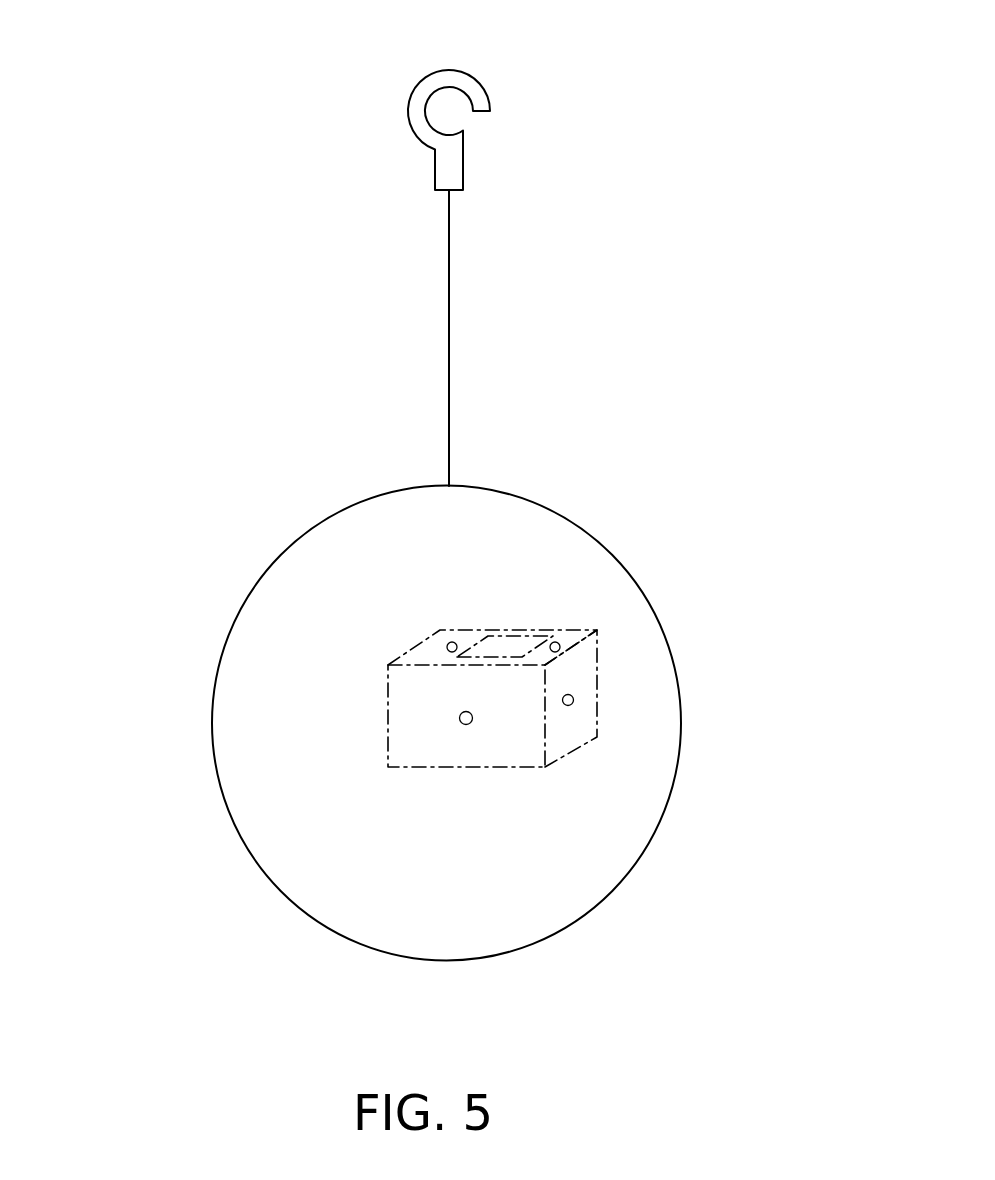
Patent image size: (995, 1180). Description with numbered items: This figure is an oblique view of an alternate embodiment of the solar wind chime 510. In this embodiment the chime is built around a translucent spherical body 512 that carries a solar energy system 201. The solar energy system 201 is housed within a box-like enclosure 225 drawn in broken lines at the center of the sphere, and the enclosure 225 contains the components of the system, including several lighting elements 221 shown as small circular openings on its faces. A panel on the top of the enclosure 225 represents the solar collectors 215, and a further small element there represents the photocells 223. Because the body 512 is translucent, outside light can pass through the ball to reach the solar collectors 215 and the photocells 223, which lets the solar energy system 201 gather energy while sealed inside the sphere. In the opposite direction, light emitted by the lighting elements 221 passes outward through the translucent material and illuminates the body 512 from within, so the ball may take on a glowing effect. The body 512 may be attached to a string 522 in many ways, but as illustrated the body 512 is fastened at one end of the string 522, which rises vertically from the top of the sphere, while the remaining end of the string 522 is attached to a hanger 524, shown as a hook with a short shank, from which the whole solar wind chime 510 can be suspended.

The solar wind chime 510 is at (131, 429).
The translucent spherical body 512 is at (621, 892).
The string 522 is at (453, 302).
The hanger 524 is at (483, 81).
The solar energy system 201 is at (418, 718).
The solar collectors 215 is at (527, 635).
The lighting elements 221 is at (558, 646).
The photocells 223 is at (456, 643).
The enclosure 225 is at (598, 695).